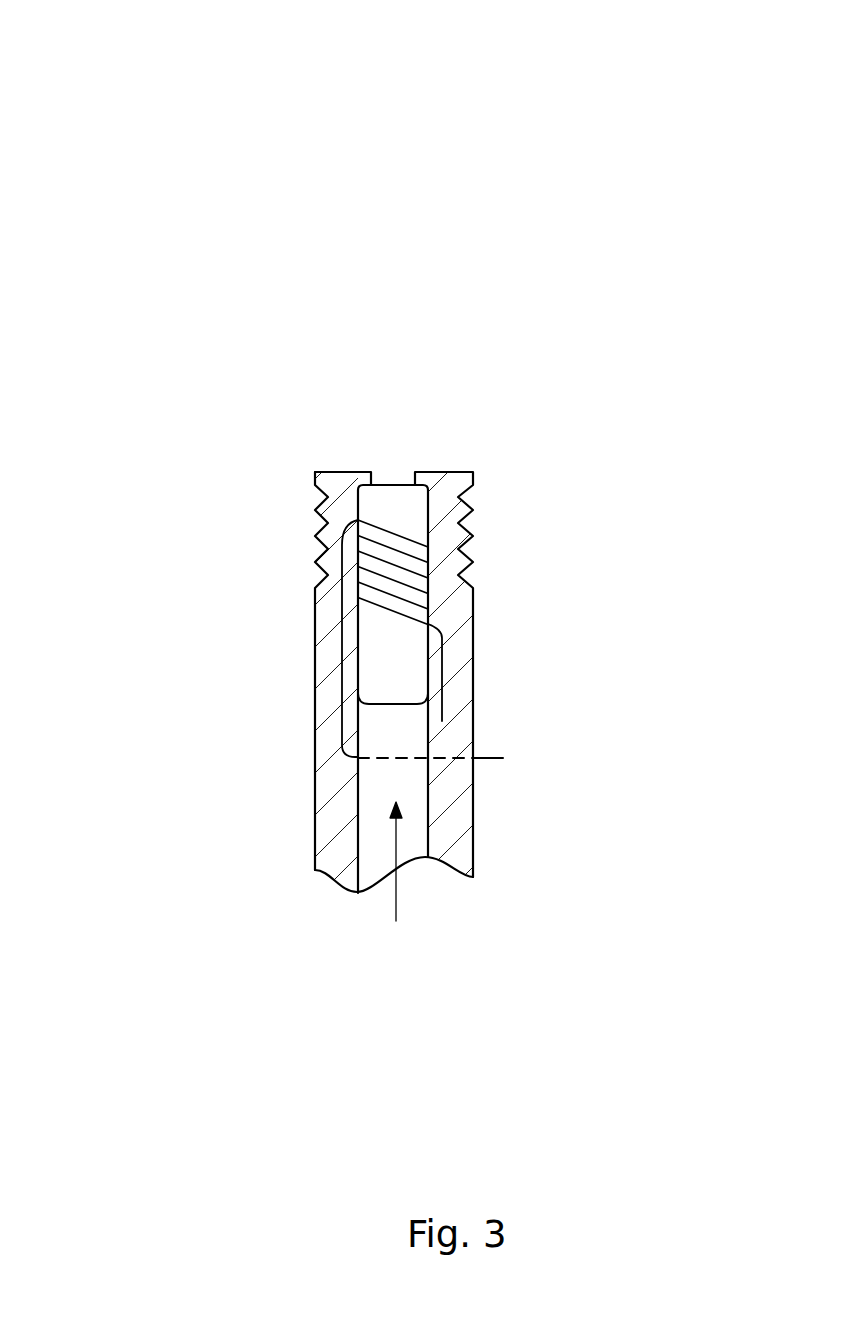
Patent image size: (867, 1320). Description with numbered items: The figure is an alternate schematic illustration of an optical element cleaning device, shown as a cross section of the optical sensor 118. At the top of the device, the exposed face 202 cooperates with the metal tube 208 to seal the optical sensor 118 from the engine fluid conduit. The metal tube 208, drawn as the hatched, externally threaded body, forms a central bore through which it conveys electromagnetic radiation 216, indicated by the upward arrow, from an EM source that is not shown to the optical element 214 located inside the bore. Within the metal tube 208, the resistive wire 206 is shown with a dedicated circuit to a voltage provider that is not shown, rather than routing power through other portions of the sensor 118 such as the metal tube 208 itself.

The optical sensor 118 is at (102, 91).
The exposed face 202 is at (388, 472).
The resistive wire 206 is at (442, 721).
The metal tube 208 is at (443, 823).
The optical element 214 is at (392, 670).
The electromagnetic radiation 216 is at (396, 918).